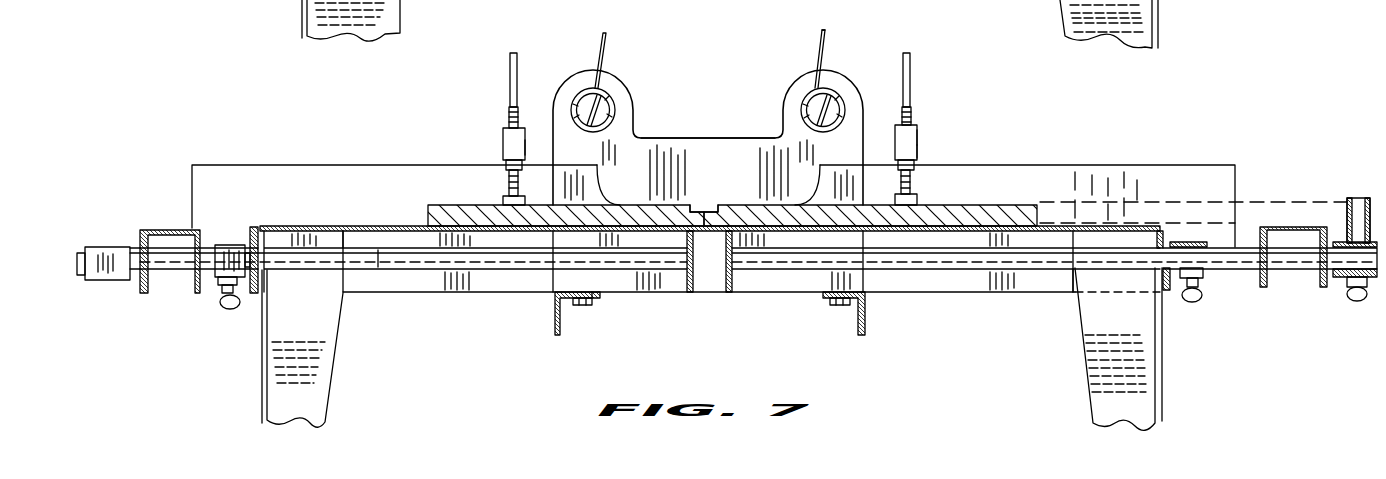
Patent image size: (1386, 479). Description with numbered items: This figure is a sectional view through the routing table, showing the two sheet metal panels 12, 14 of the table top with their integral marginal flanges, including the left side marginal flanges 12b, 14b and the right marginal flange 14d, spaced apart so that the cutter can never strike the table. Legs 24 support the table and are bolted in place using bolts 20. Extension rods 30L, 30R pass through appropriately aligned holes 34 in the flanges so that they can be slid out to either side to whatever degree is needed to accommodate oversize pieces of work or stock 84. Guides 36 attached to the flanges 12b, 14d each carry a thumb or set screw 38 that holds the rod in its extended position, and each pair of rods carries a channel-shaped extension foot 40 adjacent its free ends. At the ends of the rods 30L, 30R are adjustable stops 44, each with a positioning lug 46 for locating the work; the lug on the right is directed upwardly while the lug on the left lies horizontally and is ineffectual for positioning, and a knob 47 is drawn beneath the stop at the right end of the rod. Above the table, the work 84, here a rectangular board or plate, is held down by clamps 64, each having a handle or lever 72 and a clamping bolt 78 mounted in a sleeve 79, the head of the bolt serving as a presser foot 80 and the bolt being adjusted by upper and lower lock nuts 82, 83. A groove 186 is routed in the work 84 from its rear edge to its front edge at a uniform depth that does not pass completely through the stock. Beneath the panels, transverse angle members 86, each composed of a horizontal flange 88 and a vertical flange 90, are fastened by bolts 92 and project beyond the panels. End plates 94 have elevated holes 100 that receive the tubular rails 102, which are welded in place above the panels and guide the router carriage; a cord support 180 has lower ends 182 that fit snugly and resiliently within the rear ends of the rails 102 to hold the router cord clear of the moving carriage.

The sheet metal panel 12 is at (349, 214).
The left side marginal flange 12b is at (258, 293).
The sheet metal panel 14 is at (1105, 213).
The left side marginal flange 14b is at (733, 292).
The right marginal flange 14d is at (690, 292).
The bolt 20 is at (1148, 33).
The leg 24 is at (315, 16).
The extension rod 30L is at (368, 270).
The extension rod 30R is at (1032, 260).
The hole 34 is at (267, 271).
The guide 36 is at (230, 246).
The set screw 38 is at (220, 307).
The channel-shaped extension foot 40 is at (163, 232).
The adjustable stop 44 is at (1333, 290).
The positioning lug 46 is at (1357, 198).
The knob 47 is at (1357, 303).
The clamp 64 is at (500, 147).
The handle or lever 72 is at (508, 90).
The clamping bolt 78 is at (912, 187).
The sleeve 79 is at (917, 148).
The presser foot 80 is at (503, 197).
The upper lock nut 82 is at (918, 123).
The lower lock nut 83 is at (527, 160).
The work or stock 84 is at (1003, 200).
The transverse angle member 86 is at (550, 332).
The horizontal flange 88 is at (598, 297).
The vertical flange 90 is at (553, 310).
The bolt 92 is at (580, 307).
The end plate 94 is at (713, 150).
The hole 100 is at (607, 97).
The tubular rail 102 is at (588, 92).
The cord support 180 is at (827, 43).
The lower end 182 is at (600, 112).
The groove 186 is at (703, 210).